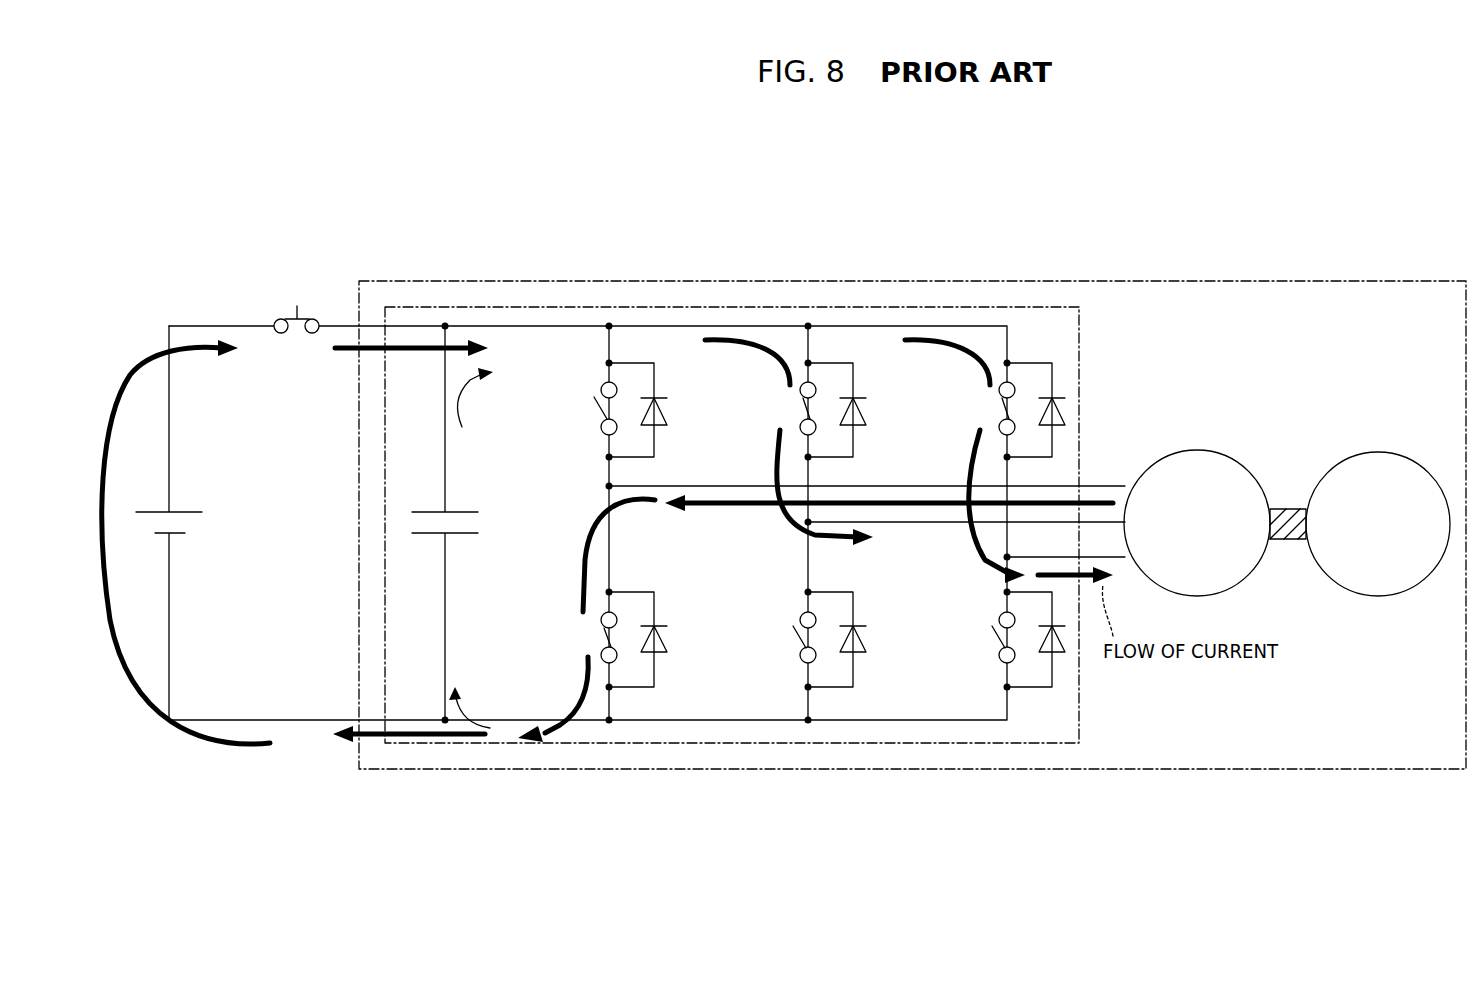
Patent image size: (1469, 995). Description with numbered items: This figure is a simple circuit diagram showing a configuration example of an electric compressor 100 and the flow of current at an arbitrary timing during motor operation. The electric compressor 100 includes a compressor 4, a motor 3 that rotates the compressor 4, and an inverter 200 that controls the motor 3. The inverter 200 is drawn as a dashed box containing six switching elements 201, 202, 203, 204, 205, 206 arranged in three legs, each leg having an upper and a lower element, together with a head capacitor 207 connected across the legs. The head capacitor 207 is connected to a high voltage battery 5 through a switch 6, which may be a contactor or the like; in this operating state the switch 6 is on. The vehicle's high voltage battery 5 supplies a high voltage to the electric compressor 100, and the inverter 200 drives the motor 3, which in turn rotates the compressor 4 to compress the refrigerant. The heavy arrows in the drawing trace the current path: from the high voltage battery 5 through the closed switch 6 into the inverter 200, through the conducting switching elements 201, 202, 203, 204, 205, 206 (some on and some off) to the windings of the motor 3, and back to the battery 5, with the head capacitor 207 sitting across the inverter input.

The electric compressor 100 is at (1333, 281).
The inverter 200 is at (1080, 360).
The switch 6 is at (275, 319).
The high voltage battery 5 is at (186, 507).
The head capacitor 207 is at (458, 507).
The switching element 201 is at (597, 392).
The switching element 202 is at (757, 407).
The switching element 203 is at (957, 410).
The switching element 204 is at (562, 636).
The switching element 205 is at (788, 608).
The switching element 206 is at (963, 612).
The motor 3 is at (1213, 450).
The compressor 4 is at (1375, 452).